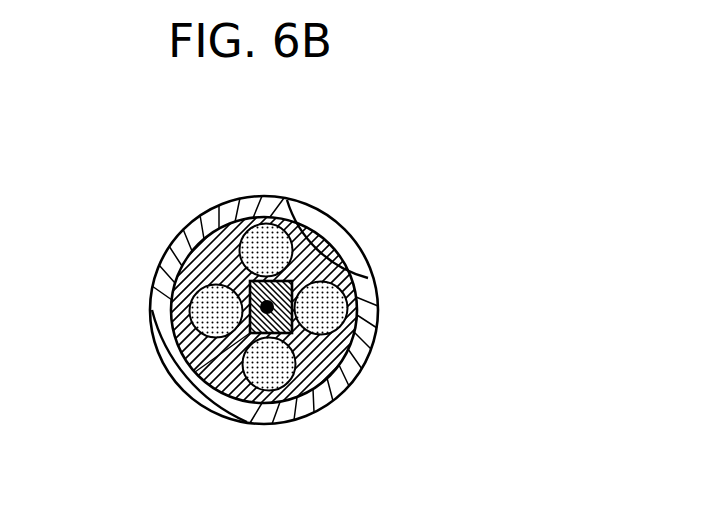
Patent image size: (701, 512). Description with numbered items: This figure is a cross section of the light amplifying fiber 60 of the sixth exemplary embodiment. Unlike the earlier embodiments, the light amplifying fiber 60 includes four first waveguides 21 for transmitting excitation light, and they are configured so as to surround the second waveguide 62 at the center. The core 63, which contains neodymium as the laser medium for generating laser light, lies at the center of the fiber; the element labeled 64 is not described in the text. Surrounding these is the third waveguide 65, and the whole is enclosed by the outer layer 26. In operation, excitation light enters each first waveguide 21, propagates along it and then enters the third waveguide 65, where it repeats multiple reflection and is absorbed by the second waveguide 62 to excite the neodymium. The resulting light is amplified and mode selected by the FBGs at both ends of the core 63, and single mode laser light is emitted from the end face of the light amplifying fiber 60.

The first waveguide 21 is at (262, 362).
The outer layer 26 is at (308, 403).
The light amplifying fiber 60 is at (158, 380).
The second waveguide 62 is at (259, 306).
The core 63 is at (250, 281).
The buffer tube 64 is at (266, 281).
The third waveguide 65 is at (337, 350).